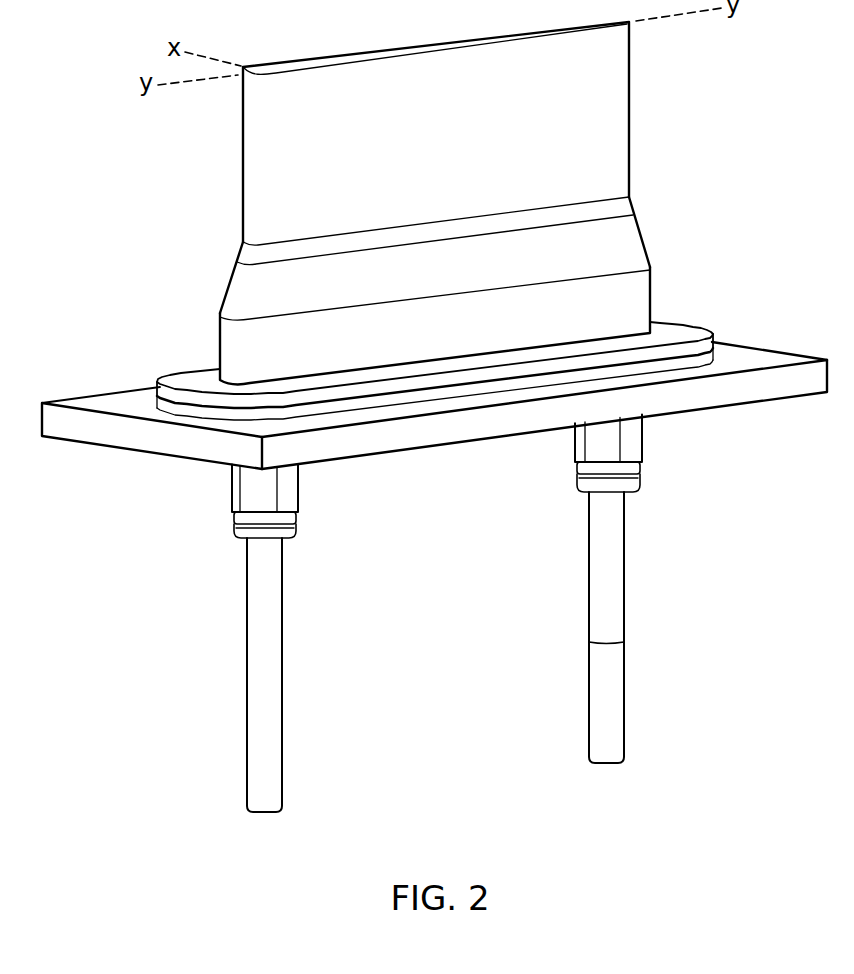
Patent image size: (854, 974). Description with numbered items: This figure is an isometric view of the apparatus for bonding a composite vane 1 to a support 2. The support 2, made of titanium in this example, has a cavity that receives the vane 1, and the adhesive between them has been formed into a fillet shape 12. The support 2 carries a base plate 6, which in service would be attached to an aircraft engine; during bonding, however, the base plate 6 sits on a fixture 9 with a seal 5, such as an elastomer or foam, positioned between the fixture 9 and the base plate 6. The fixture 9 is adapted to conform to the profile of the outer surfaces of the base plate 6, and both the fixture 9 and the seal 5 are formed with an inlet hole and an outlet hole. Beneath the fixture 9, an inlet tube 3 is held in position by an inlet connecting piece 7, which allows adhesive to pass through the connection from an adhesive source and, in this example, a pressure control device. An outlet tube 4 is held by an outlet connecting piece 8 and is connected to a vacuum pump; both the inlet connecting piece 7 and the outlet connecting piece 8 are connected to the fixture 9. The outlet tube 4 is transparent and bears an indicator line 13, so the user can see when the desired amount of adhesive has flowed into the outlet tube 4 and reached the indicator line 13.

The composite vane 1 is at (632, 100).
The support 2 is at (640, 285).
The inlet tube 3 is at (265, 633).
The outlet tube 4 is at (608, 581).
The seal 5 is at (710, 360).
The base plate 6 is at (687, 332).
The inlet connecting piece 7 is at (292, 490).
The outlet connecting piece 8 is at (632, 447).
The fixture 9 is at (803, 373).
The fillet shape 12 is at (625, 207).
The indicator line 13 is at (610, 643).